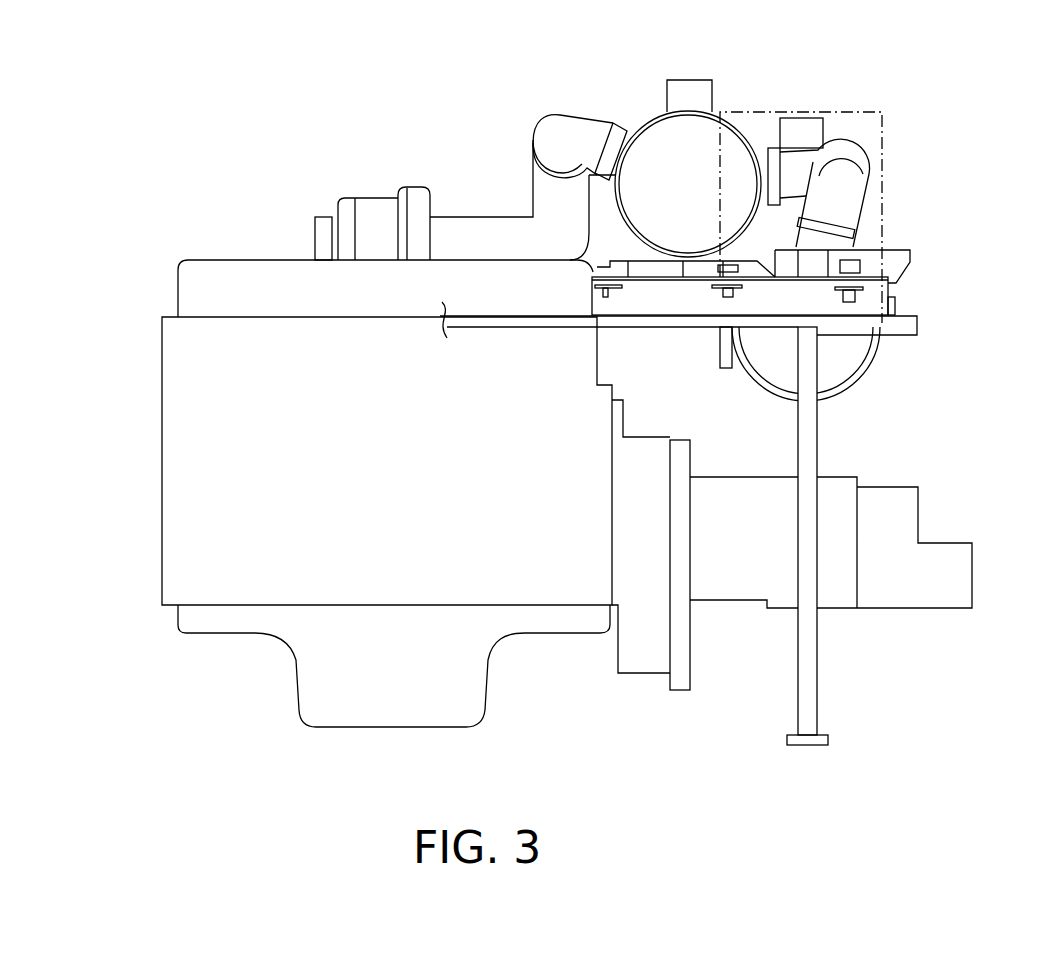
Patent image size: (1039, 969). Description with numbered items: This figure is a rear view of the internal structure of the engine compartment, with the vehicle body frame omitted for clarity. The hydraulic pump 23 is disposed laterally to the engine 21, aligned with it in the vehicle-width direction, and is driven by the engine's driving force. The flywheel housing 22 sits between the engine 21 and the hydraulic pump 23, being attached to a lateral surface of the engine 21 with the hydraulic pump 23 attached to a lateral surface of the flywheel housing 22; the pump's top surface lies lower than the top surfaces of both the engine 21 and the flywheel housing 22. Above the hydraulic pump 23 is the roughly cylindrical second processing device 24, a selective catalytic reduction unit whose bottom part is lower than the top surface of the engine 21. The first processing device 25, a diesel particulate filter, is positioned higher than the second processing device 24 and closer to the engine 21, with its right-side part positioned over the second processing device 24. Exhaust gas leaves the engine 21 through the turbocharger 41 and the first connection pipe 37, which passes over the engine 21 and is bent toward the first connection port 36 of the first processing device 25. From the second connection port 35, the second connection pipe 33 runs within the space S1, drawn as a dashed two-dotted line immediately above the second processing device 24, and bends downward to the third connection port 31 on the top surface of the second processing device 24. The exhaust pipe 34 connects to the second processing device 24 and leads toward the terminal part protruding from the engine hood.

The engine 21 is at (220, 585).
The flywheel housing 22 is at (641, 657).
The hydraulic pump 23 is at (885, 585).
The second processing device 24 is at (845, 357).
The first processing device 25 is at (683, 133).
The third connection port 31 is at (820, 237).
The second connection pipe 33 is at (847, 160).
The exhaust pipe 34 is at (808, 132).
The second connection port 35 is at (766, 165).
The first connection port 36 is at (628, 125).
The first connection pipe 37 is at (552, 137).
The turbocharger 41 is at (418, 207).
The space S1 is at (883, 173).